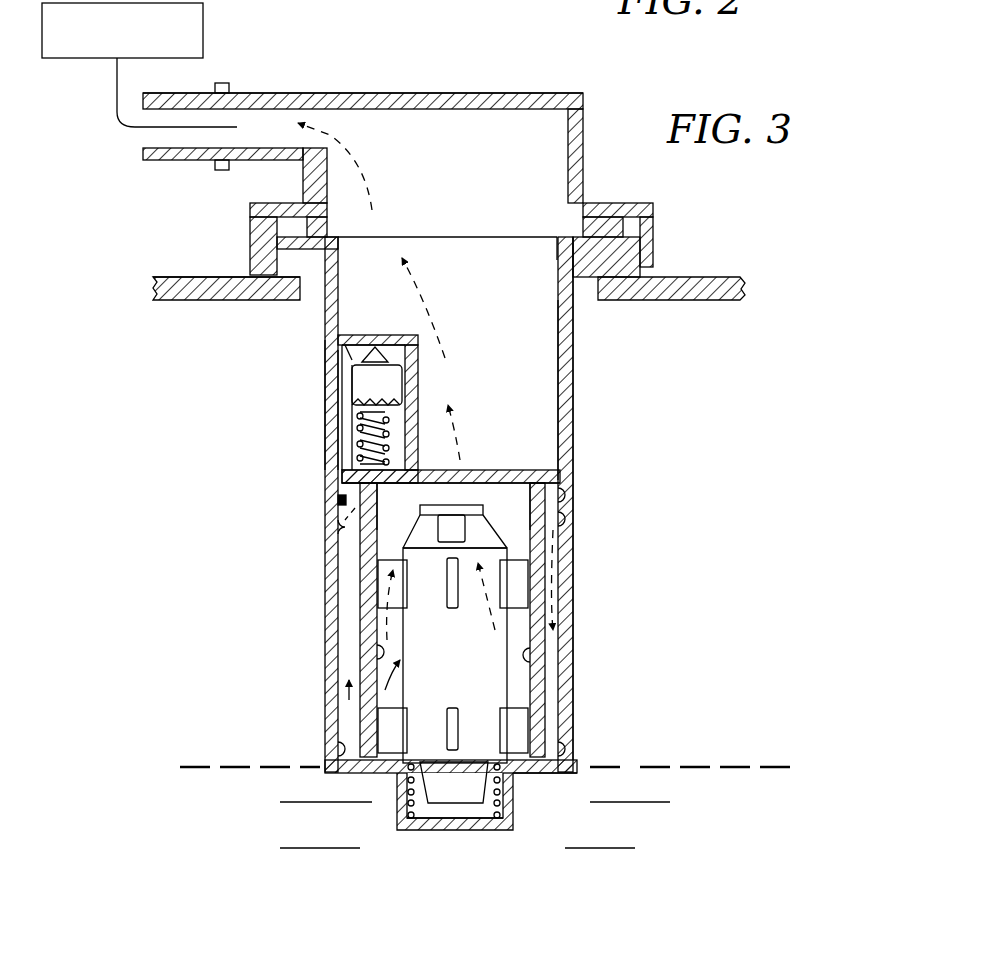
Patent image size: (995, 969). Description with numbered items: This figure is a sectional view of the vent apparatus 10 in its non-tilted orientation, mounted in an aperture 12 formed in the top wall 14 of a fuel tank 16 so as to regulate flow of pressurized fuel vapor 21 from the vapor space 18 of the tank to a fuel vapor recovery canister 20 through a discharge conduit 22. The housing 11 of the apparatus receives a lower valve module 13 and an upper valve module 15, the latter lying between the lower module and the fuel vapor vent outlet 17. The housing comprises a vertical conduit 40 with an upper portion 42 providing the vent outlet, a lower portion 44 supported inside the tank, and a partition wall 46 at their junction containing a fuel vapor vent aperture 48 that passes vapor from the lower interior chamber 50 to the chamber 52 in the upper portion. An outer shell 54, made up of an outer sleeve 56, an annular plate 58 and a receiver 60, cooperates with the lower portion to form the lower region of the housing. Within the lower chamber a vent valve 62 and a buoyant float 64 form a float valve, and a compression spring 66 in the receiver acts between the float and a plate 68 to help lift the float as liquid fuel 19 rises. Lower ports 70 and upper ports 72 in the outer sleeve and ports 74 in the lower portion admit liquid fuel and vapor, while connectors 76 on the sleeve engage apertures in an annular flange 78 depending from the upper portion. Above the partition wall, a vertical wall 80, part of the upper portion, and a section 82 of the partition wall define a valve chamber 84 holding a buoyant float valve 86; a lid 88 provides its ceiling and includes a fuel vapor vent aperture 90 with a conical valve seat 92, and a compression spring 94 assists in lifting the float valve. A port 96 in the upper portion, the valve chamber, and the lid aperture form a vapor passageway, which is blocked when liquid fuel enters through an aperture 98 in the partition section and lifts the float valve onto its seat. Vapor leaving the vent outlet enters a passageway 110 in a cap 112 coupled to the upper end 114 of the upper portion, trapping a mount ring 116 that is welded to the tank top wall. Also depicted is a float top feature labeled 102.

The vent apparatus 10 is at (680, 440).
The housing 11 is at (268, 645).
The aperture 12 is at (572, 286).
The lower valve module 13 is at (520, 635).
The top wall 14 is at (690, 290).
The upper valve module 15 is at (462, 398).
The fuel tank 16 is at (172, 280).
The fuel vapor vent outlet 17 is at (545, 250).
The vapor space 18 is at (218, 322).
The liquid fuel 19 is at (660, 775).
The fuel vapor recovery canister 20 is at (203, 34).
The fuel vapor 21 is at (368, 168).
The discharge conduit 22 is at (110, 92).
The vertical conduit 40 is at (580, 360).
The upper portion 42 is at (332, 397).
The lower portion 44 is at (404, 530).
The partition wall 46 is at (492, 490).
The fuel vapor vent aperture 48 is at (468, 465).
The lower interior chamber 50 is at (524, 470).
The chamber 52 is at (538, 356).
The outer shell 54 is at (578, 622).
The outer sleeve 56 is at (580, 688).
The annular plate 58 is at (556, 772).
The receiver 60 is at (518, 806).
The vent valve 62 is at (335, 515).
The buoyant float 64 is at (400, 665).
The compression spring 66 is at (402, 800).
The plate 68 is at (425, 830).
The lower ports 70 is at (340, 748).
The upper ports 72 is at (332, 527).
The ports 74 is at (370, 652).
The connectors 76 is at (567, 490).
The annular flange 78 is at (558, 490).
The vertical wall 80 is at (418, 365).
The section 82 is at (345, 474).
The valve chamber 84 is at (350, 354).
The buoyant float valve 86 is at (360, 384).
The lid 88 is at (347, 335).
The fuel vapor vent aperture 90 is at (372, 345).
The conical valve seat 92 is at (377, 385).
The compression spring 94 is at (392, 440).
The port 96 is at (330, 362).
The aperture 98 is at (372, 505).
The float top surface 102 is at (403, 527).
The passageway 110 is at (505, 135).
The cap 112 is at (476, 91).
The upper end 114 is at (312, 236).
The mount ring 116 is at (252, 246).